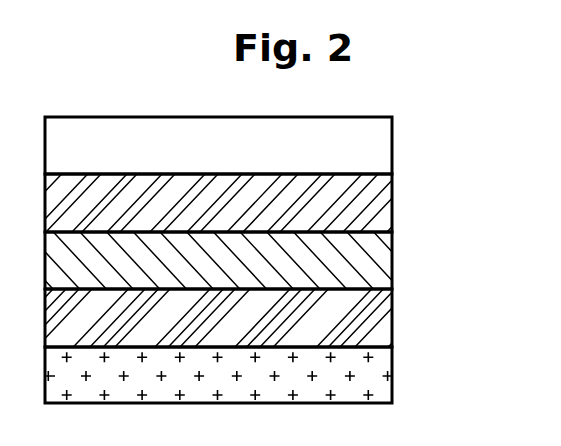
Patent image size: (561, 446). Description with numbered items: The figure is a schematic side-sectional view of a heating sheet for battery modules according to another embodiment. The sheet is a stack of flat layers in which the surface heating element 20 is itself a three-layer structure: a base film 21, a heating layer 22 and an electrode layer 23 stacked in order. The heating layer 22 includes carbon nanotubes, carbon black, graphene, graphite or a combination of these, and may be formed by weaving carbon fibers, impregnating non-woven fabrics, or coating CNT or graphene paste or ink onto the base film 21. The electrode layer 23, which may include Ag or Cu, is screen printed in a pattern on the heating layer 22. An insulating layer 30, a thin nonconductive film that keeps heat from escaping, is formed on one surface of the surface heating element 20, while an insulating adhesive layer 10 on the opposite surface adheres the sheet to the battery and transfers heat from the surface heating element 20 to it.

The insulating adhesive layer 10 is at (392, 380).
The surface heating element 20 is at (285, 260).
The base film 21 is at (261, 318).
The heating layer 22 is at (383, 263).
The electrode layer 23 is at (383, 208).
The insulating layer 30 is at (392, 147).